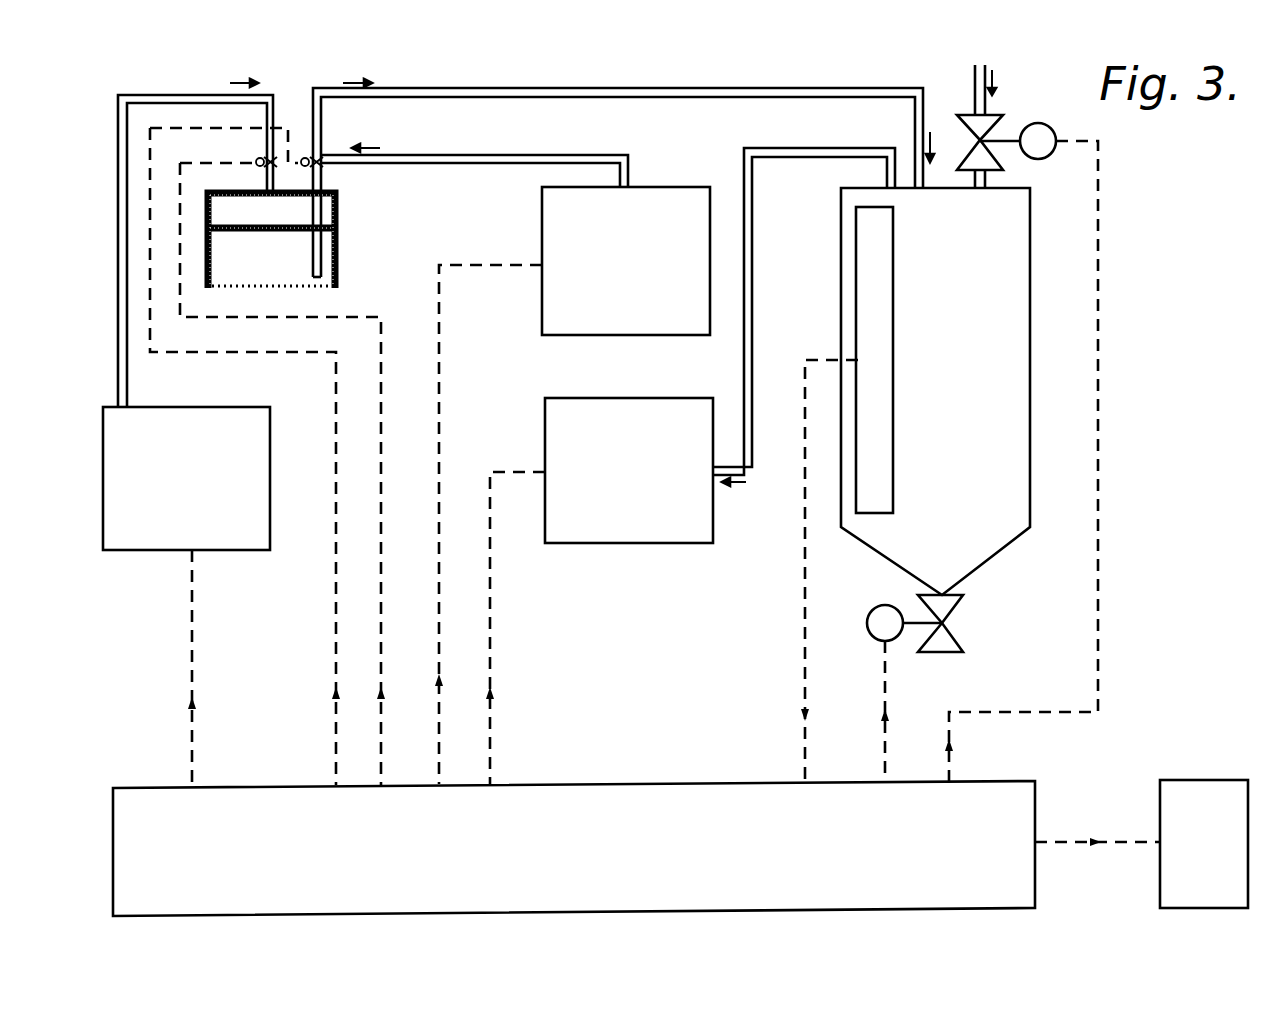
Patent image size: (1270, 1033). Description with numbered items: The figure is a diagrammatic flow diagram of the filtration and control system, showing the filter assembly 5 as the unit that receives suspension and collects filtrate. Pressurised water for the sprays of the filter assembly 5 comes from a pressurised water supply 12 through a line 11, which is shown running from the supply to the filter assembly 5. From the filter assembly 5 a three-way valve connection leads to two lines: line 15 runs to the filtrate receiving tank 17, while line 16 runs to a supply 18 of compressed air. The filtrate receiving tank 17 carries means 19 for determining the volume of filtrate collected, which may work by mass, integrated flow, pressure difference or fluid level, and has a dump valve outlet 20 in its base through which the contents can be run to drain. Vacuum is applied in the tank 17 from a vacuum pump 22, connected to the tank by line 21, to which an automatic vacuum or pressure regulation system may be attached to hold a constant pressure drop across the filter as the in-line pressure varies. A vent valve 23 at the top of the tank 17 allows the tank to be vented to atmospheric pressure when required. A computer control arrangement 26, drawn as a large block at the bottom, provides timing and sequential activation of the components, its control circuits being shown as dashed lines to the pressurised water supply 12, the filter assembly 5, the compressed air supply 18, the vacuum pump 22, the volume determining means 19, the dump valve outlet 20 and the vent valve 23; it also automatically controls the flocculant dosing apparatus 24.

The filter assembly 5 is at (355, 238).
The line 11 is at (201, 95).
The pressurised water supply 12 is at (143, 530).
The line 15 is at (703, 92).
The line 16 is at (534, 155).
The filtrate receiving tank 17 is at (1008, 305).
The supply of compressed air 18 is at (560, 307).
The means for determining volume 19 is at (868, 300).
The dump valve outlet 20 is at (942, 607).
The line 21 is at (818, 150).
The vacuum pump 22 is at (620, 530).
The vent valve 23 is at (985, 122).
The flocculant dosing apparatus 24 is at (1192, 795).
The computer control arrangement 26 is at (660, 797).